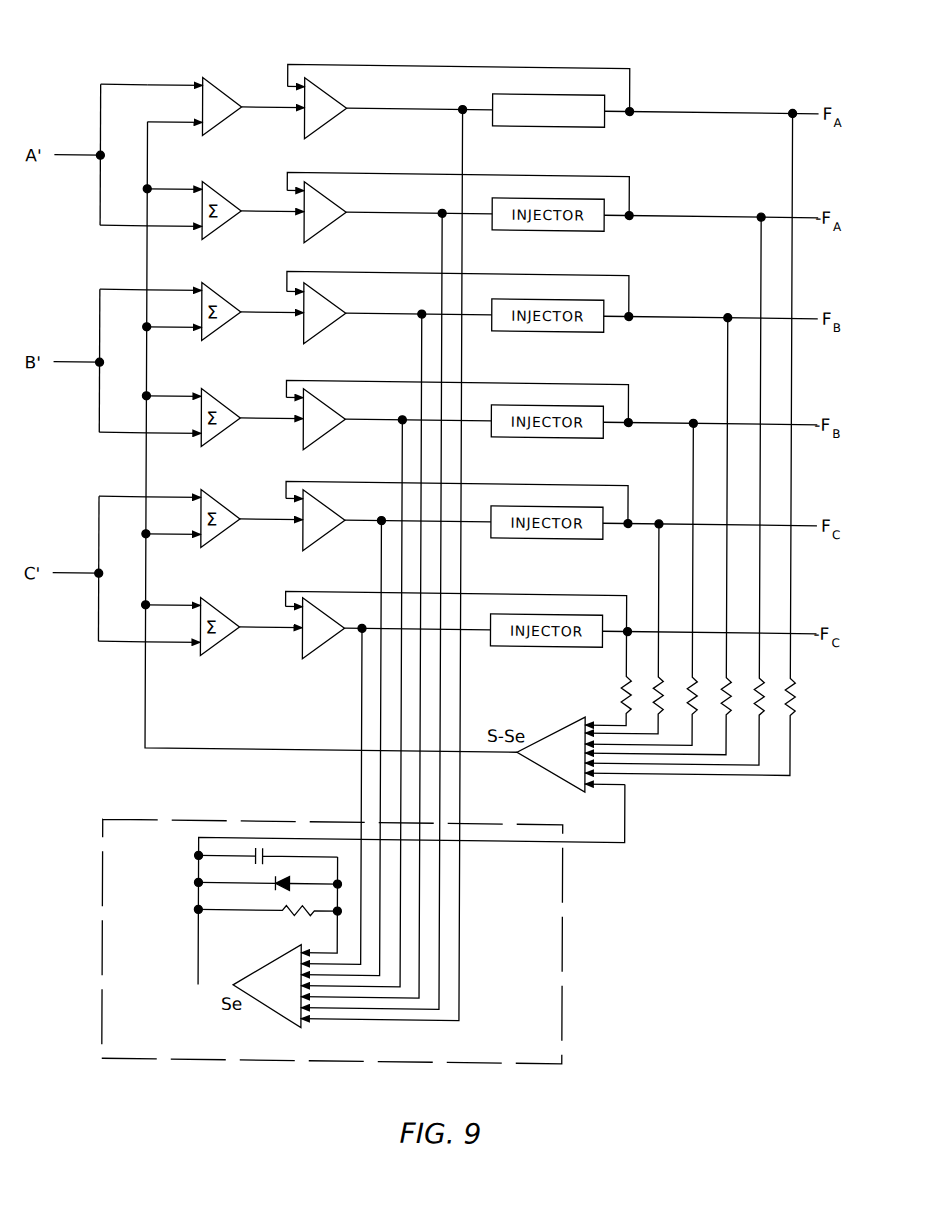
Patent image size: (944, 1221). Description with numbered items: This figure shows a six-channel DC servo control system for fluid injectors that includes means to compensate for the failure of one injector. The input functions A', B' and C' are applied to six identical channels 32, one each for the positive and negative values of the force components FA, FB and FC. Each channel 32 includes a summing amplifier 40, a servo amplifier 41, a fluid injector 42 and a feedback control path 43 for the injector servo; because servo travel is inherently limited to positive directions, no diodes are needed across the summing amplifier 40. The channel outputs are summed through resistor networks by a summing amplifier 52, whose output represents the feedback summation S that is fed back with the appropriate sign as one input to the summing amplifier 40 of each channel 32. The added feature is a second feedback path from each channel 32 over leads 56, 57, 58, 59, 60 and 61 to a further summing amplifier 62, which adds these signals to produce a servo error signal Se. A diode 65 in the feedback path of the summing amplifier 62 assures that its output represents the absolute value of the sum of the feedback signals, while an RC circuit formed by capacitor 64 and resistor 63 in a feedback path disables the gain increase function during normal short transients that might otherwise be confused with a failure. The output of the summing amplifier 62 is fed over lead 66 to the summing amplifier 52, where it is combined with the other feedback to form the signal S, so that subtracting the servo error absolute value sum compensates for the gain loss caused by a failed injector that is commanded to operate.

The channel 32 is at (260, 80).
The summing amplifier 40 is at (232, 111).
The servo amplifier 41 is at (335, 113).
The fluid injector 42 is at (585, 120).
The feedback control path 43 is at (455, 61).
The summing amplifier 52 is at (556, 726).
The lead 56 is at (463, 144).
The lead 57 is at (443, 236).
The lead 58 is at (423, 337).
The lead 59 is at (404, 447).
The lead 60 is at (384, 548).
The lead 61 is at (364, 672).
The summing amplifier 62 is at (274, 959).
The resistor 63 is at (284, 904).
The capacitor 64 is at (268, 851).
The diode 65 is at (292, 879).
The lead 66 is at (628, 835).